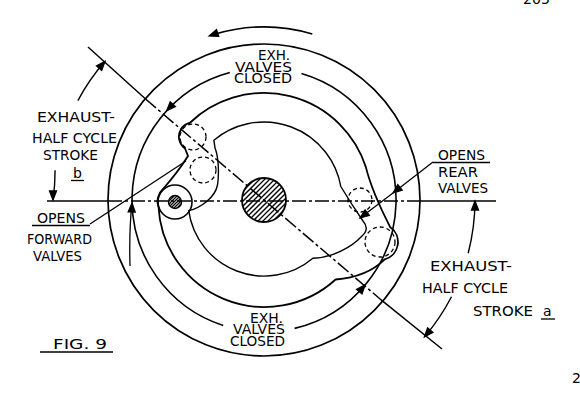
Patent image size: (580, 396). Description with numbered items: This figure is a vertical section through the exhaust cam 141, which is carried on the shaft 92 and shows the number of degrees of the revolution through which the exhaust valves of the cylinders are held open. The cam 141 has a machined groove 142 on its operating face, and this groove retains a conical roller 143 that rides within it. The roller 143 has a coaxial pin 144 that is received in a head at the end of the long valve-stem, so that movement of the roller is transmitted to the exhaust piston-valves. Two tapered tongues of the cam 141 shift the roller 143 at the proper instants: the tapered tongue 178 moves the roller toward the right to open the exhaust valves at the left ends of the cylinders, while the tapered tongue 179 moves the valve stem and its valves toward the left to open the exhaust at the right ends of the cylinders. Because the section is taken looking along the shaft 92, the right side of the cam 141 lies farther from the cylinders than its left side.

The shaft 92 is at (283, 188).
The cam 141 is at (184, 330).
The machined groove 142 is at (321, 289).
The conical roller 143 is at (192, 204).
The coaxial pin 144 is at (177, 209).
The tapered tongue 178 is at (182, 161).
The tapered tongue 179 is at (357, 231).